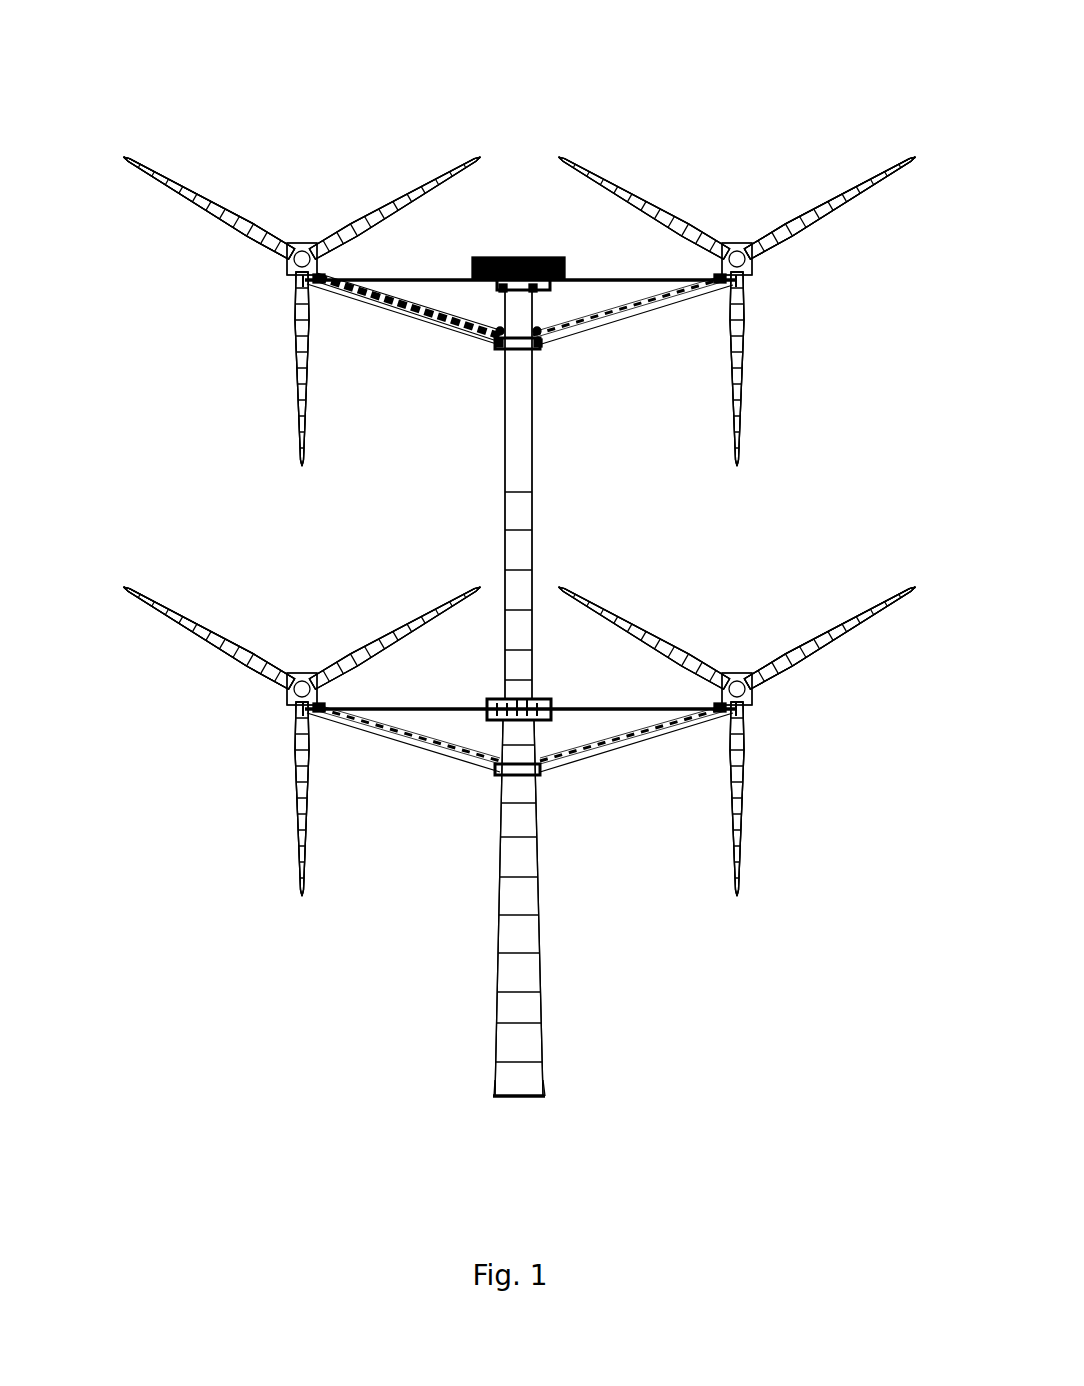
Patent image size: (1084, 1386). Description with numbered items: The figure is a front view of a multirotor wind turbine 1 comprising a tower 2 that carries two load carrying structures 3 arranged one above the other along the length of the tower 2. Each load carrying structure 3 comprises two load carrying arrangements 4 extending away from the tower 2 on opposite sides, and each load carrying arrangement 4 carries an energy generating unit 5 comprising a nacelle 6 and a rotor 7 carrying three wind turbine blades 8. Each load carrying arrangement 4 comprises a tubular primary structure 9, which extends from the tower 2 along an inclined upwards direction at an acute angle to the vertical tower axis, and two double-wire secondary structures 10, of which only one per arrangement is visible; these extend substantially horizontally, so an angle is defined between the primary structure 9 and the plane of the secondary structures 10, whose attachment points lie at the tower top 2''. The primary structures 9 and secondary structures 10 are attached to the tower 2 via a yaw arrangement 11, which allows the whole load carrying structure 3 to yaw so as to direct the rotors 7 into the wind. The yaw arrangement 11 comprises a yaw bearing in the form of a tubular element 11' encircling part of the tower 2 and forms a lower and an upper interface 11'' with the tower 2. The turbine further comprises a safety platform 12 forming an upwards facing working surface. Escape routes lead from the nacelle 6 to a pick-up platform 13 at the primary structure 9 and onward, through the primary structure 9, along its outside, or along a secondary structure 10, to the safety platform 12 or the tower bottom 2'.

The multirotor wind turbine 1 is at (783, 63).
The tower 2 is at (598, 693).
The tower bottom 2' is at (434, 1055).
The tower top 2'' is at (535, 249).
The load carrying structure 3 is at (630, 240).
The load carrying arrangement 4 is at (398, 320).
The energy generating unit 5 is at (298, 238).
The nacelle 6 is at (310, 247).
The rotor 7 is at (300, 262).
The wind turbine blade 8 is at (158, 182).
The primary structure 9 is at (430, 317).
The secondary structure 10 is at (465, 277).
The yaw arrangement 11 is at (526, 571).
The tubular element 11' is at (551, 356).
The upper and lower interface 11'' is at (547, 350).
The safety platform 12 is at (515, 262).
The pick-up platform 13 is at (320, 273).